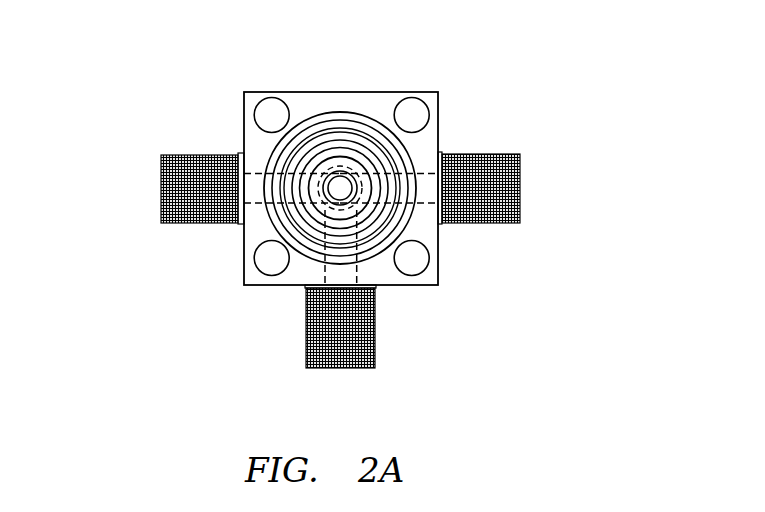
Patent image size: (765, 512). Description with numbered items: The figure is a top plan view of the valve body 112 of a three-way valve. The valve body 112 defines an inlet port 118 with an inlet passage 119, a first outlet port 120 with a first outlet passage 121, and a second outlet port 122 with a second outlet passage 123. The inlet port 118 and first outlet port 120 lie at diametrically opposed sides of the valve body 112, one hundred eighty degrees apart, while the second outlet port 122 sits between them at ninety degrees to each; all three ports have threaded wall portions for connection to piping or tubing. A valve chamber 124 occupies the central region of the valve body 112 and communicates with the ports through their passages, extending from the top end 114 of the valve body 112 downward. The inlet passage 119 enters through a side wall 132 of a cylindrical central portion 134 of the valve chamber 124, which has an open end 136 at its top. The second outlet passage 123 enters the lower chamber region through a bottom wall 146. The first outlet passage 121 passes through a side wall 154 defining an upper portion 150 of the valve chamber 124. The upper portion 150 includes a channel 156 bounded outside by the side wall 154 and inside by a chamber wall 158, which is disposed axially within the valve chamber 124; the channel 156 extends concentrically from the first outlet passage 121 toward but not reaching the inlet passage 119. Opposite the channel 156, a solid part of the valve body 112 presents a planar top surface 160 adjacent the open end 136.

The valve body 112 is at (243, 123).
The top end 114 is at (315, 135).
The inlet port 118 is at (160, 188).
The inlet passage 119 is at (260, 203).
The first outlet port 120 is at (520, 180).
The first outlet passage 121 is at (423, 208).
The second outlet port 122 is at (343, 370).
The second outlet passage 123 is at (380, 285).
The valve chamber 124 is at (395, 240).
The side wall 132 is at (335, 207).
The central portion 134 is at (313, 213).
The open end 136 is at (402, 153).
The bottom wall 146 is at (347, 163).
The upper portion 150 is at (385, 130).
The side wall 154 is at (385, 168).
The channel 156 is at (337, 157).
The chamber wall 158 is at (293, 228).
The planar top surface 160 is at (403, 225).